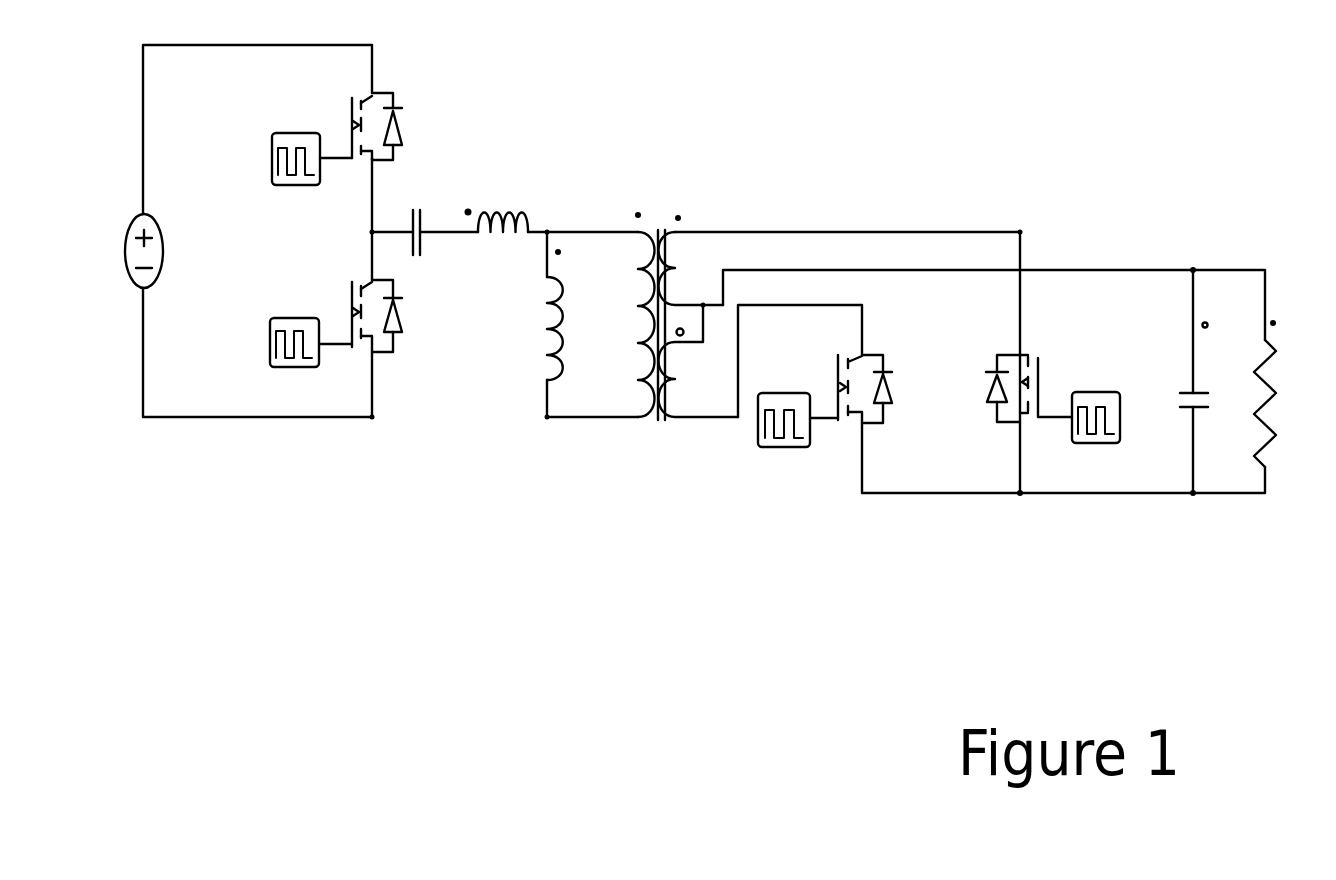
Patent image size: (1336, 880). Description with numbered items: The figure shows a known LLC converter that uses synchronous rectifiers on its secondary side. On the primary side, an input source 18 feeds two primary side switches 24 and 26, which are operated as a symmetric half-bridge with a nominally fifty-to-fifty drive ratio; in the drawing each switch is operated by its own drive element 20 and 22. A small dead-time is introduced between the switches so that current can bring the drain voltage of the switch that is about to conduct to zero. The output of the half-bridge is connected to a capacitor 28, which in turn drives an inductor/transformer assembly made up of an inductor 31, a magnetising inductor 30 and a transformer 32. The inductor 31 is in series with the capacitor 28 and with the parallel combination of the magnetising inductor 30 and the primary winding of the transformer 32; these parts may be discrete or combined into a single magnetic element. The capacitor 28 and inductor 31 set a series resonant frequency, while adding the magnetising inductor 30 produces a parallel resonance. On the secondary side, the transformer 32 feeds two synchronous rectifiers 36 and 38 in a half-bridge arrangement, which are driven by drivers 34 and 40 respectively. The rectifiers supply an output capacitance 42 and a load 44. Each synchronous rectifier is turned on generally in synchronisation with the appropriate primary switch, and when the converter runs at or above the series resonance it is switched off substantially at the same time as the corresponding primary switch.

The DC voltage source 18 is at (160, 251).
The gate drive pulse generator 20 is at (312, 143).
The gate drive pulse generator 22 is at (311, 327).
The primary side switch 24 is at (395, 126).
The primary side switch 26 is at (395, 316).
The capacitor 28 is at (428, 215).
The magnetising inductor 30 is at (570, 328).
The inductor 31 is at (504, 204).
The transformer 32 is at (688, 298).
The driver 34 is at (798, 403).
The synchronous rectifier 36 is at (882, 389).
The synchronous rectifier 38 is at (1032, 388).
The driver 40 is at (1096, 402).
The output capacitance 42 is at (1211, 398).
The load 44 is at (1282, 403).